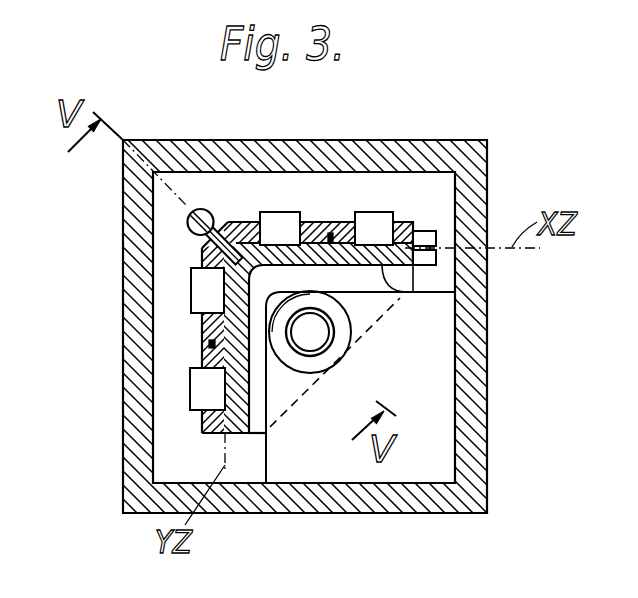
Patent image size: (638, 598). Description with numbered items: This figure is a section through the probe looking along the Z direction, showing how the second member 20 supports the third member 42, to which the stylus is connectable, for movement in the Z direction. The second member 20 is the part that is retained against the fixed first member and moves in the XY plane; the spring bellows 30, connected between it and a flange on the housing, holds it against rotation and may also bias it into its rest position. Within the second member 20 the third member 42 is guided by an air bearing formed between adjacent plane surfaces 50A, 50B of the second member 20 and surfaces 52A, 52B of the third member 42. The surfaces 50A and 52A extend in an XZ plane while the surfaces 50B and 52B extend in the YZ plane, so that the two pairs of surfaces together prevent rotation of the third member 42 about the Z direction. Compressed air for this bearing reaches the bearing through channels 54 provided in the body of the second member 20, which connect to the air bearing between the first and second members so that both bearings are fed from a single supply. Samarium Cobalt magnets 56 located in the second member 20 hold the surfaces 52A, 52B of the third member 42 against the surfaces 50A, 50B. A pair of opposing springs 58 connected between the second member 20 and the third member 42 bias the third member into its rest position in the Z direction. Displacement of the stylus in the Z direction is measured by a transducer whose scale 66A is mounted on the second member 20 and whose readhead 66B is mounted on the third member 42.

The second member 20 is at (408, 230).
The spring bellows 30 is at (350, 326).
The third member 42 is at (400, 292).
The plane surface 50A is at (248, 362).
The plane surface 50B is at (368, 243).
The plane surface 52A is at (202, 426).
The plane surface 52B is at (315, 226).
The channels 54 is at (332, 236).
The Samarium Cobalt magnets 56 is at (201, 390).
The opposing springs 58 is at (187, 223).
The scale 66A is at (436, 266).
The readhead 66B is at (438, 232).